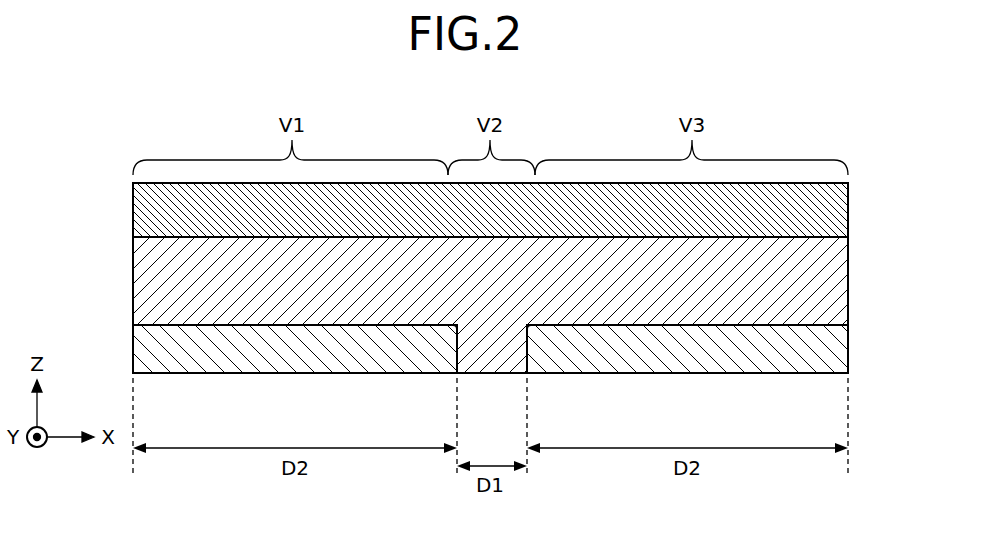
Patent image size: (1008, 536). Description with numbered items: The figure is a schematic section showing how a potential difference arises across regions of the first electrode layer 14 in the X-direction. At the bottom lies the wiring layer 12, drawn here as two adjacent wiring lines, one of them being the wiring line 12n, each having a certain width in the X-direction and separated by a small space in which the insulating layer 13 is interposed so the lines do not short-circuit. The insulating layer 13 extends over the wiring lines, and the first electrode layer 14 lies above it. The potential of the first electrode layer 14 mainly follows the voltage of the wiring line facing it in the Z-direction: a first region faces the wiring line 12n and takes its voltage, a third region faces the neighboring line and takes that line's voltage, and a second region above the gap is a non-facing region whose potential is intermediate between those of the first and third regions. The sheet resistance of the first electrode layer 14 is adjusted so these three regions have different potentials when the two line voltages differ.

The wiring layer 12 is at (528, 375).
The wiring line 12n is at (286, 354).
The insulating layer 13 is at (833, 283).
The first electrode layer 14 is at (828, 212).